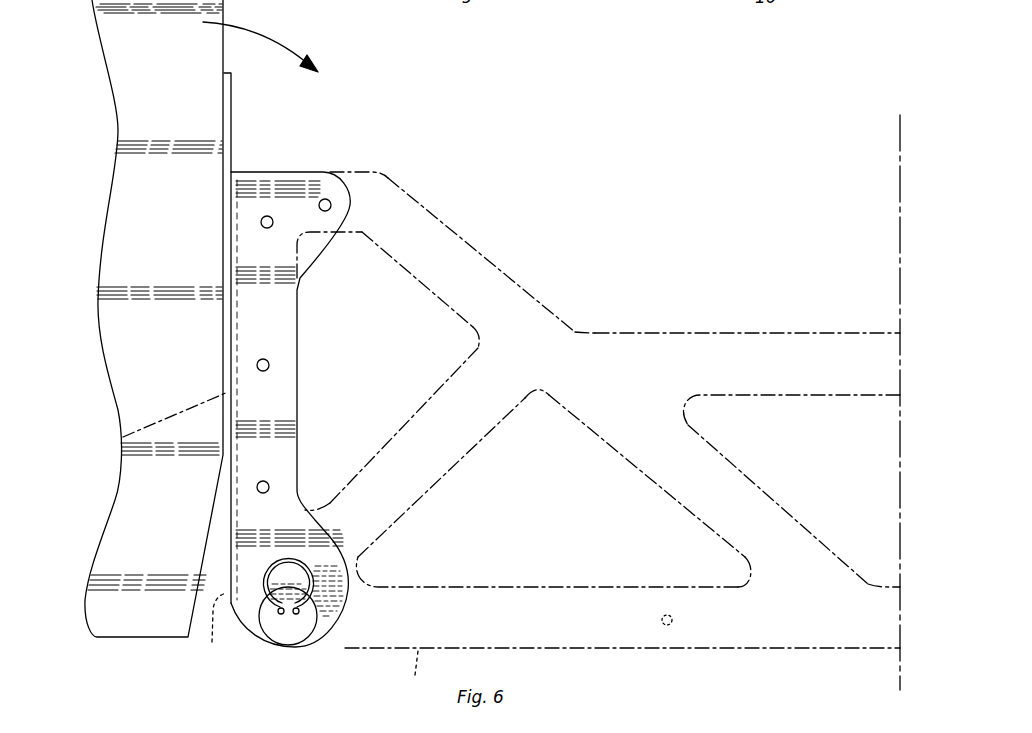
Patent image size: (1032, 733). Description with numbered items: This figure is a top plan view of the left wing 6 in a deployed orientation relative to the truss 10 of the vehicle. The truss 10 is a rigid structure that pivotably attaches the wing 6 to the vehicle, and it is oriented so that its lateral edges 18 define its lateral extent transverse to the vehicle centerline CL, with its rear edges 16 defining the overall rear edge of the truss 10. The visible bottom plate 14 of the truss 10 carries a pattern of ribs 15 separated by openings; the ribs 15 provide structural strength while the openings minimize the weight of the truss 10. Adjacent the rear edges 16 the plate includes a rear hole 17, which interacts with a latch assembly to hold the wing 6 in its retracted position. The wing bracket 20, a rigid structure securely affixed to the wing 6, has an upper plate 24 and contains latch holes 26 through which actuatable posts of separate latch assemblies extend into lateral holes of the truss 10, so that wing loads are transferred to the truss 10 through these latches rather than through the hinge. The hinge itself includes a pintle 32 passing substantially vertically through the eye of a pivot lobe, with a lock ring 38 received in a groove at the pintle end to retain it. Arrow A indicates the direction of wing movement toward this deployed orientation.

The left wing 6 is at (160, 96).
The truss 10 is at (598, 435).
The bottom plate 14 is at (626, 390).
The ribs 15 is at (466, 280).
The rear edges 16 is at (210, 647).
The rear holes 17 is at (660, 624).
The lateral edges 18 is at (123, 437).
The wing bracket 20 is at (318, 313).
The upper plate 24 is at (274, 311).
The latch holes 26 is at (261, 220).
The pintle 32 is at (292, 638).
The lock rings 38 is at (264, 632).
The direction arrow A is at (267, 34).
The centerline CL is at (900, 217).